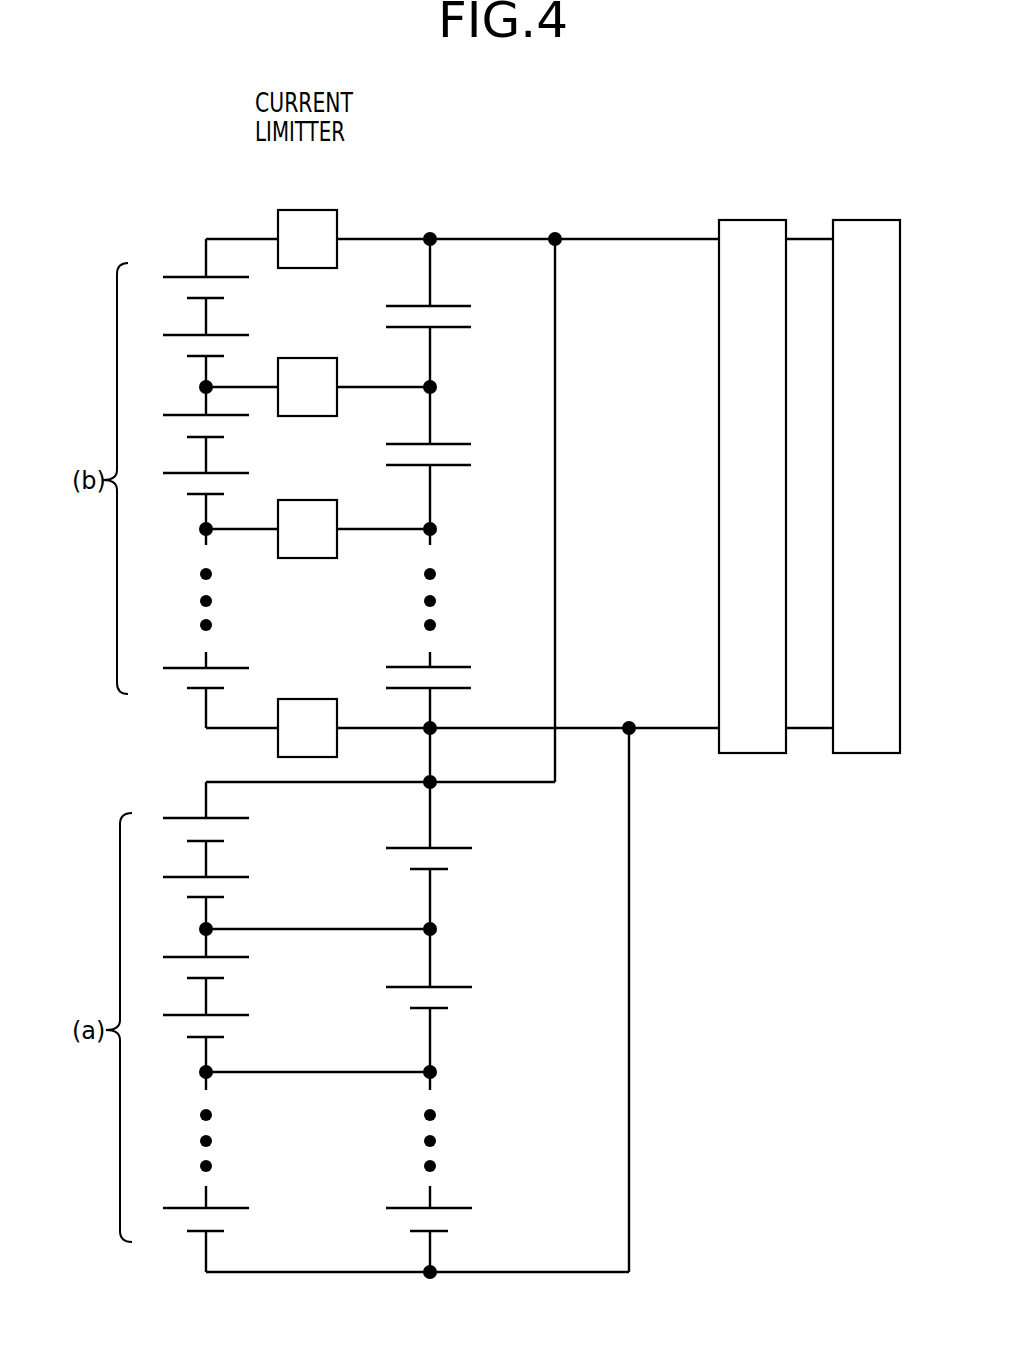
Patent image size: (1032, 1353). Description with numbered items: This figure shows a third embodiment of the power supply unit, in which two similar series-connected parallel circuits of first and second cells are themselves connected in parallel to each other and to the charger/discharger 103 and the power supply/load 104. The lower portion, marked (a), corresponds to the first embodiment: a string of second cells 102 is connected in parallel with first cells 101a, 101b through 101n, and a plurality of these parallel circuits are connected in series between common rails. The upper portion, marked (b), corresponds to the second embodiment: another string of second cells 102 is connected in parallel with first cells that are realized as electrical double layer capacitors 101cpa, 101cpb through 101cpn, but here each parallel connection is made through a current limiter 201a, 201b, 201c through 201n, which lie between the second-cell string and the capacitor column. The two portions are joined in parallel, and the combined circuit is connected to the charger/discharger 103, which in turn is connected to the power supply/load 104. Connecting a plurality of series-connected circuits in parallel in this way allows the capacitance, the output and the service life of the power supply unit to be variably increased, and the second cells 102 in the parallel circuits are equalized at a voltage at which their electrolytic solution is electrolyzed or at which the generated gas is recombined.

The second cell group 102 is at (206, 236).
The current limiter 201a is at (292, 210).
The current limiter 201b is at (292, 358).
The current limiter 201c is at (292, 500).
The current limiter 201n is at (292, 699).
The electrical double layer capacitor 101cpa is at (489, 296).
The electrical double layer capacitor 101cpb is at (489, 434).
The electrical double layer capacitor 101cpn is at (489, 657).
The first cell 101a is at (474, 862).
The first cell 101b is at (474, 1001).
The first cell 101n is at (474, 1224).
The charger/discharger 103 is at (752, 220).
The power supply/load 104 is at (866, 220).